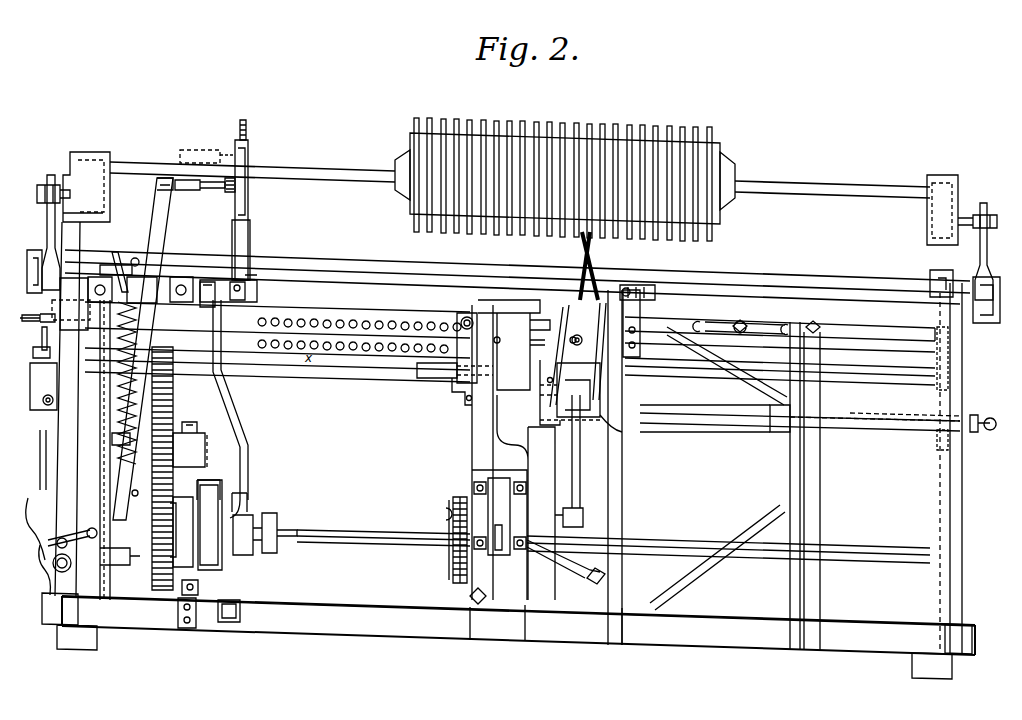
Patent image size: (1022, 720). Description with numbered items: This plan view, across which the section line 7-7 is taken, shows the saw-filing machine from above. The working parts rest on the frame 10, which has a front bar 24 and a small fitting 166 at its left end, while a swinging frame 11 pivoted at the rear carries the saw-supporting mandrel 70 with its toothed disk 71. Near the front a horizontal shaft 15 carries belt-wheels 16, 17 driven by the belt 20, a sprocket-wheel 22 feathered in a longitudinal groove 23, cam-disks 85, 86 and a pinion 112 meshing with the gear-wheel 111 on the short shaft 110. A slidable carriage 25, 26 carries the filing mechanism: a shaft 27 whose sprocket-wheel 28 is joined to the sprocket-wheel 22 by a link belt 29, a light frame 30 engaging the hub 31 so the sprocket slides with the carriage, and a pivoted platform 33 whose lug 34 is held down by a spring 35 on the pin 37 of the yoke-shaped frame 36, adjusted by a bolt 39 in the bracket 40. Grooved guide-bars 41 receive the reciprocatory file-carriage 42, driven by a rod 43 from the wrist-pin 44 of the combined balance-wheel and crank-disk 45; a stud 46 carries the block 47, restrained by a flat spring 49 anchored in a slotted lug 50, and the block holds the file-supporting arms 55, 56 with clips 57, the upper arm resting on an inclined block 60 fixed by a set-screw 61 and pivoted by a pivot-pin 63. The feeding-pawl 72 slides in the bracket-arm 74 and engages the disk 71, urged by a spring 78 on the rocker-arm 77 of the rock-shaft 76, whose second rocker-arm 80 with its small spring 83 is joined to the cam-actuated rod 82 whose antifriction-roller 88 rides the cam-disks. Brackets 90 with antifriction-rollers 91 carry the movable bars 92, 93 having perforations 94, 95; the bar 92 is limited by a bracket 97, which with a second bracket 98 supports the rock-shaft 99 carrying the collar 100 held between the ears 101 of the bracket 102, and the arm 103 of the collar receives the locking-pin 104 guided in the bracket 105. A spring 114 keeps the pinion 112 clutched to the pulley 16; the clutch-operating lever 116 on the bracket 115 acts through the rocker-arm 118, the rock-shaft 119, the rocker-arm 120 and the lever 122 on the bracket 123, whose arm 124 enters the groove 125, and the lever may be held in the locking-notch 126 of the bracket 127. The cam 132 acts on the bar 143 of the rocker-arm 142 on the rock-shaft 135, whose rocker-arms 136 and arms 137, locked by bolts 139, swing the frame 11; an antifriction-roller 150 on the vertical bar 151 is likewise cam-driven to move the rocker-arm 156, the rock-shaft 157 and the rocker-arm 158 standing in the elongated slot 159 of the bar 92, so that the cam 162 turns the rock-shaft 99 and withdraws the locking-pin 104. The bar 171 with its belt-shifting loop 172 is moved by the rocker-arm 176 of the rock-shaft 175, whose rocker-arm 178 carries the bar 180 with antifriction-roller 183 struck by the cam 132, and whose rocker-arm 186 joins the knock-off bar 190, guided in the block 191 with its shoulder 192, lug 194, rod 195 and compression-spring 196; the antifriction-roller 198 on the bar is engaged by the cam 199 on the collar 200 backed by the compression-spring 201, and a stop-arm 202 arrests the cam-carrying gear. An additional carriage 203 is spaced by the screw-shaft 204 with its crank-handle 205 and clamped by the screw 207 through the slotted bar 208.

The frame standard 7 is at (466, 312).
The side frame 10 is at (962, 366).
The bearing bracket 11 is at (92, 160).
The shaft 15 is at (350, 532).
The gear 16 is at (184, 532).
The gear 17 is at (210, 525).
The bracket 20 is at (210, 572).
The gear wheel 22 is at (452, 560).
The shaft 23 is at (397, 540).
The bar 24 is at (328, 293).
The base rail 25 is at (508, 633).
The base rail 26 is at (600, 624).
The bearing block 27 is at (495, 512).
The pinion 28 is at (452, 500).
The gear 29 is at (452, 525).
The link 30 is at (560, 588).
The bearing 31 is at (512, 530).
The brush roller 33 is at (540, 285).
The bolt 34 is at (628, 285).
The nut 35 is at (640, 287).
The washer 36 is at (650, 290).
The bracket 37 is at (645, 300).
The pin 39 is at (658, 294).
The guide 40 is at (640, 316).
The carrier 41 is at (536, 305).
The block 42 is at (570, 392).
The rod 43 is at (578, 452).
The foot 44 is at (584, 512).
The upright 45 is at (526, 497).
The pin 46 is at (540, 342).
The pin 47 is at (538, 322).
The link 49 is at (605, 370).
The spring 50 is at (622, 432).
The pivot 55 is at (589, 327).
The arm 56 is at (589, 351).
The arm 57 is at (590, 290).
The pin 60 is at (568, 318).
The lever 61 is at (572, 290).
The pin 63 is at (540, 392).
The shaft 70 is at (850, 186).
The pin 71 is at (246, 136).
The rod 72 is at (248, 208).
The sleeve 74 is at (250, 228).
The block 76 is at (210, 282).
The bracket 77 is at (246, 278).
The base 78 is at (258, 290).
The arm 80 is at (208, 322).
The lever 82 is at (217, 385).
The pin 83 is at (210, 315).
The pulley 85 is at (262, 555).
The collar 86 is at (255, 555).
The fork 88 is at (250, 508).
The lever 90 is at (225, 358).
The link 91 is at (255, 345).
The bar 92 is at (370, 318).
The hole 93 is at (372, 345).
The bar 94 is at (407, 318).
The hole 95 is at (400, 345).
The rail 97 is at (962, 345).
The rack 98 is at (157, 362).
The hole 99 is at (345, 365).
The rod 100 is at (437, 372).
The bracket 101 is at (460, 390).
The pin 102 is at (466, 402).
The bracket 103 is at (462, 340).
The bar 104 is at (457, 300).
The bar 105 is at (485, 300).
The arm 110 is at (220, 460).
The rack 111 is at (162, 590).
The rod 112 is at (189, 462).
The bracket 114 is at (120, 555).
The pin 115 is at (42, 333).
The block 116 is at (33, 350).
The block 118 is at (32, 396).
The pivot 119 is at (46, 405).
The rod 120 is at (45, 440).
The pivot 122 is at (52, 568).
The link 123 is at (30, 498).
The bracket 124 is at (120, 565).
The pin 125 is at (140, 568).
The screw 126 is at (33, 362).
The slot 127 is at (30, 383).
The block 132 is at (189, 444).
The rail 135 is at (345, 268).
The fork 136 is at (30, 272).
The rod 137 is at (47, 231).
The nut 139 is at (37, 196).
The bar 142 is at (120, 262).
The pin 143 is at (135, 258).
The rack 150 is at (173, 412).
The spring 151 is at (125, 395).
The collar 156 is at (117, 438).
The collar 157 is at (127, 452).
The spring 158 is at (130, 315).
The block 159 is at (90, 330).
The pin 162 is at (150, 330).
The screw 166 is at (27, 317).
The bracket 171 is at (262, 622).
The fork 172 is at (222, 485).
The link 175 is at (50, 580).
The block 176 is at (95, 628).
The link 178 is at (44, 555).
The rod 180 is at (44, 470).
The rack 183 is at (188, 389).
The link 186 is at (72, 535).
The rod 190 is at (165, 232).
The pin 191 is at (166, 278).
The pin 192 is at (165, 270).
The block 194 is at (140, 294).
The lever 195 is at (112, 265).
The block 196 is at (52, 306).
The bar 198 is at (157, 185).
The link 199 is at (185, 190).
The bar 200 is at (222, 156).
The spring 201 is at (228, 192).
The pin 202 is at (132, 496).
The base 203 is at (850, 638).
The rod 204 is at (862, 420).
The knob 205 is at (985, 432).
The slot 207 is at (742, 320).
The bar 208 is at (770, 335).